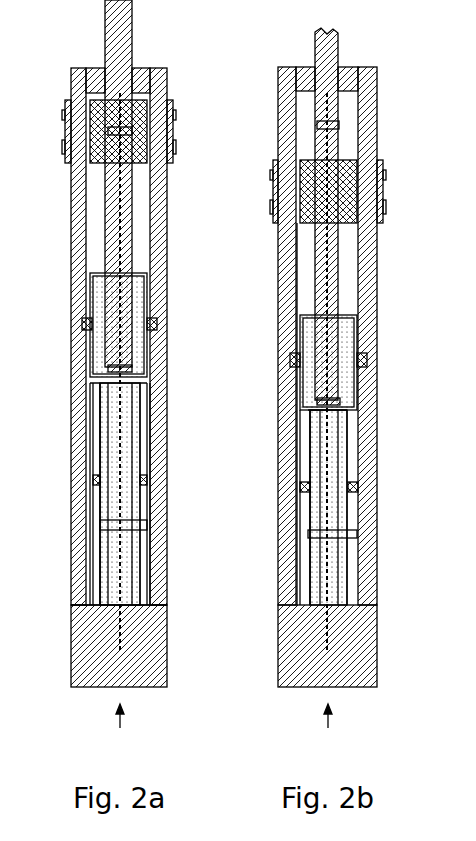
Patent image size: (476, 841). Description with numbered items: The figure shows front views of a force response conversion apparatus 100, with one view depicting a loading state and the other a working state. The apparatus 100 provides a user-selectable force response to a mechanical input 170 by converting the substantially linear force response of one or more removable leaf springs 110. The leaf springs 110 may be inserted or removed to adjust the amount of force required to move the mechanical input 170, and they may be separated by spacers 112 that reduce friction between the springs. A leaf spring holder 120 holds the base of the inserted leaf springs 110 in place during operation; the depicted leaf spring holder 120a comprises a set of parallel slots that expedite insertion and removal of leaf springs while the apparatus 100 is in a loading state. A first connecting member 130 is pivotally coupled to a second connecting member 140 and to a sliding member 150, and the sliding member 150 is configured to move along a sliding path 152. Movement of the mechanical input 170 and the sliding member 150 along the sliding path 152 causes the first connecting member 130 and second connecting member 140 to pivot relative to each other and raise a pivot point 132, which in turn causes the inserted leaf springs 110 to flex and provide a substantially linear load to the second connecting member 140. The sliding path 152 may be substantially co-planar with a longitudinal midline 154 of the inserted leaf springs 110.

In FIG. 2A, the force response conversion apparatus 100 is at (121, 730).
In FIG. 2B, the force response conversion apparatus 100 is at (329, 730).
In FIG. 2A, the removable leaf springs 110 is at (100, 510).
In FIG. 2B, the removable leaf springs 110 is at (305, 512).
In FIG. 2A, the spacers 112 is at (147, 522).
In FIG. 2B, the spacers 112 is at (357, 530).
In FIG. 2A, the leaf spring holder 120 is at (83, 606).
In FIG. 2A, the leaf spring holder 120a is at (62, 631).
In FIG. 2B, the leaf spring holder 120a is at (270, 631).
In FIG. 2A, the first connecting member 130 is at (112, 230).
In FIG. 2B, the first connecting member 130 is at (320, 257).
In FIG. 2A, the pivot point 132 is at (85, 324).
In FIG. 2B, the pivot point 132 is at (292, 362).
In FIG. 2A, the second connecting member 140 is at (97, 355).
In FIG. 2B, the second connecting member 140 is at (310, 390).
In FIG. 2A, the sliding member 150 is at (66, 132).
In FIG. 2B, the sliding member 150 is at (272, 190).
In FIG. 2A, the sliding path 152 is at (120, 190).
In FIG. 2B, the sliding path 152 is at (328, 126).
In FIG. 2A, the longitudinal midline 154 is at (120, 585).
In FIG. 2B, the longitudinal midline 154 is at (328, 586).
In FIG. 2A, the mechanical input 170 is at (112, 42).
In FIG. 2B, the mechanical input 170 is at (322, 56).